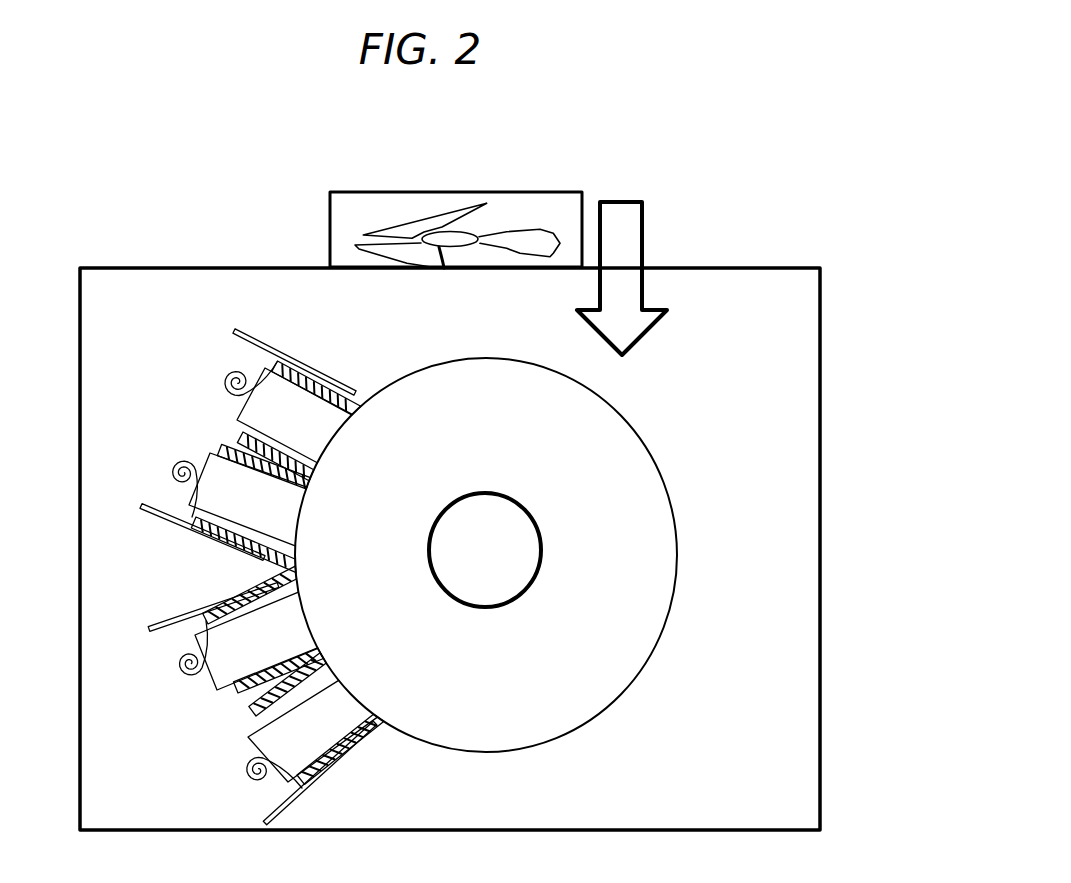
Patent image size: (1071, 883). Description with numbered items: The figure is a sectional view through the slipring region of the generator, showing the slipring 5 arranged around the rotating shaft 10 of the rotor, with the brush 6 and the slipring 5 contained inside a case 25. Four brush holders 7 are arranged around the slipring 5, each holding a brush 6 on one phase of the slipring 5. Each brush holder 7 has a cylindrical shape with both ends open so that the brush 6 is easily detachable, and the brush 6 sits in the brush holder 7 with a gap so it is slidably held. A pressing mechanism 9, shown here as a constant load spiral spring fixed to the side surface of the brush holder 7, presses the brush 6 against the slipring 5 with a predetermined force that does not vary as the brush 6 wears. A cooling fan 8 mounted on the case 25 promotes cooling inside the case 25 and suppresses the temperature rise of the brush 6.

The slipring 5 is at (623, 457).
The brush 6 is at (253, 410).
The brush holder 7 is at (243, 437).
The cooling fan 8 is at (432, 210).
The pressing mechanism 9 is at (233, 330).
The rotating shaft 10 is at (513, 545).
The case 25 is at (716, 267).